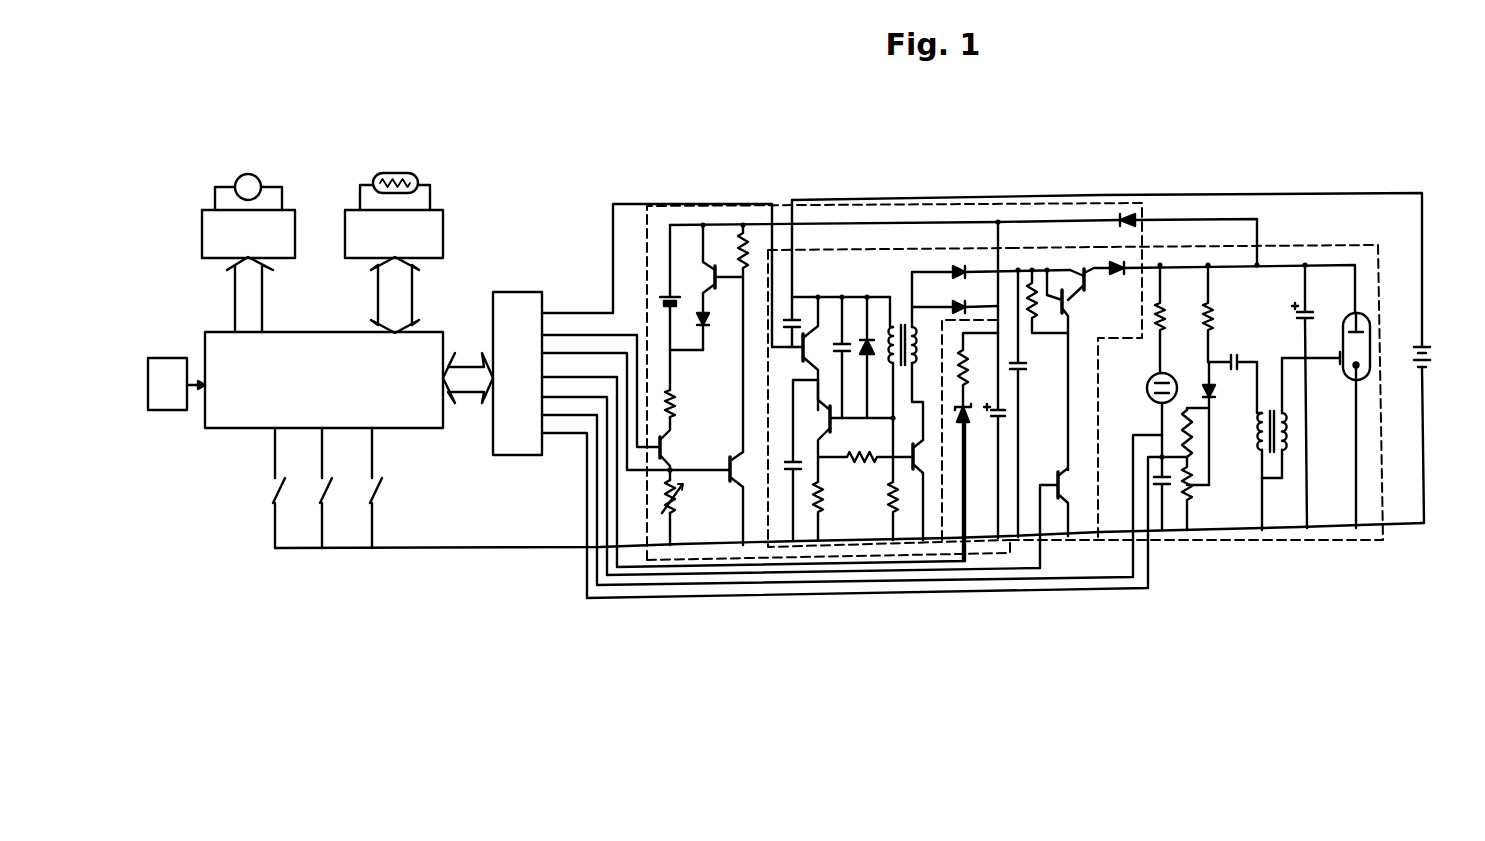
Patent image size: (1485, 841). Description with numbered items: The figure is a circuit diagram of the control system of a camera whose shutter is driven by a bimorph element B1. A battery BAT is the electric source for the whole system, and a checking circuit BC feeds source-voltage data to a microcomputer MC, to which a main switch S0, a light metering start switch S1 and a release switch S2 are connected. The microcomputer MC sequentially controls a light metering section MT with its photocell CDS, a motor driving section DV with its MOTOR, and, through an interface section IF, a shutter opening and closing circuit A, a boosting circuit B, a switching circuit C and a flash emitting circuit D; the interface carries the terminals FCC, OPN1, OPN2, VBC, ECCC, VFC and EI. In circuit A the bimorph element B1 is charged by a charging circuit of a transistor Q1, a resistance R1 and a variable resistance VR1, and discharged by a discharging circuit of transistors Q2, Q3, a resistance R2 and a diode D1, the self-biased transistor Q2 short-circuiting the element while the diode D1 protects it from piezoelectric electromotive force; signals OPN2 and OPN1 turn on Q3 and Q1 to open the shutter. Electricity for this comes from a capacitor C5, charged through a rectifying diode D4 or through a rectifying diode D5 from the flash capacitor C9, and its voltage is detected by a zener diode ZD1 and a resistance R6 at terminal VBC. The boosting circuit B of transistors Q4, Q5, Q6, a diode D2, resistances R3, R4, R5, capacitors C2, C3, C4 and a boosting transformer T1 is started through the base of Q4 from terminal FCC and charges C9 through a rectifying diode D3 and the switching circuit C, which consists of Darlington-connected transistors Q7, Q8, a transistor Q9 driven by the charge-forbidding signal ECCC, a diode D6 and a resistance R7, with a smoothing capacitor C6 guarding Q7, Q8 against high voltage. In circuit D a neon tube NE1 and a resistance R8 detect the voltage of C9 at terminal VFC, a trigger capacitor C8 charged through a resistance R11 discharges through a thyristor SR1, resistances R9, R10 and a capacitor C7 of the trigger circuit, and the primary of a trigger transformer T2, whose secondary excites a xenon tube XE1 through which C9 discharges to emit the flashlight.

The motor MOTOR is at (247, 180).
The CdS photocell CDS is at (395, 180).
The motor driving section DV is at (248, 234).
The light metering section MT is at (394, 234).
The microcomputer MC is at (324, 380).
The battery checking circuit BC is at (176, 384).
The interface section IF is at (517, 373).
The main switch S0 is at (265, 488).
The light metering start switch S1 is at (313, 488).
The release switch S2 is at (362, 488).
The boosting control terminal FCC is at (672, 275).
The shutter opening signal 1 OPN1 is at (601, 381).
The shutter opening signal 2 OPN2 is at (636, 402).
The bimorph capacitor voltage detecting terminal VBC is at (753, 462).
The flash charge forbidding signal ECCC is at (800, 476).
The flash capacitor voltage detecting terminal VFC is at (852, 490).
The flash trigger signal terminal EI is at (864, 506).
The shutter opening and closing circuit A is at (733, 208).
The boosting circuit B is at (883, 262).
The switching circuit C is at (1083, 253).
The flash emitting circuit D is at (1307, 243).
The bimorph element B1 is at (674, 307).
The resistance R1 is at (681, 403).
The resistance R2 is at (729, 338).
The charging transistor Q1 is at (678, 448).
The short-circuiting transistor Q2 is at (711, 269).
The transistor Q3 is at (749, 498).
The diode D1 is at (717, 331).
The variable resistance VR1 is at (688, 512).
The capacitor C2 is at (794, 318).
The capacitor C3 is at (793, 458).
The capacitor C4 is at (842, 342).
The diode D2 is at (870, 337).
The boosting transformer T1 is at (921, 356).
The rectifying diode D3 is at (999, 265).
The rectifying diode D4 is at (963, 300).
The boosting start transistor Q4 is at (796, 353).
The transistor Q5 is at (845, 431).
The transistor Q6 is at (933, 490).
The resistance R3 is at (832, 511).
The resistance R4 is at (865, 448).
The resistance R5 is at (906, 479).
The resistance R6 is at (978, 370).
The zener diode ZD1 is at (968, 418).
The bimorph driving capacitor C5 is at (1012, 412).
The smoothing capacitor C6 is at (1033, 403).
The resistance R7 is at (1047, 301).
The switching transistor Q7 is at (1088, 280).
The switching transistor Q8 is at (1068, 304).
The transistor Q9 is at (1076, 502).
The rectifying diode D5 is at (1124, 201).
The rectifying diode D6 is at (1223, 279).
The resistance R8 is at (1173, 319).
The resistance R11 is at (1225, 314).
The flash emitting capacitor C9 is at (1317, 396).
The xenon tube XE1 is at (1374, 420).
The battery BAT is at (1407, 435).
The neon tube NE1 is at (1175, 415).
The thyristor SR1 is at (1227, 423).
The trigger capacitor C8 is at (1232, 374).
The resistance R9 is at (1211, 432).
The resistance R10 is at (1217, 493).
The trigger transformer T2 is at (1298, 444).
The capacitor C7 is at (1162, 477).